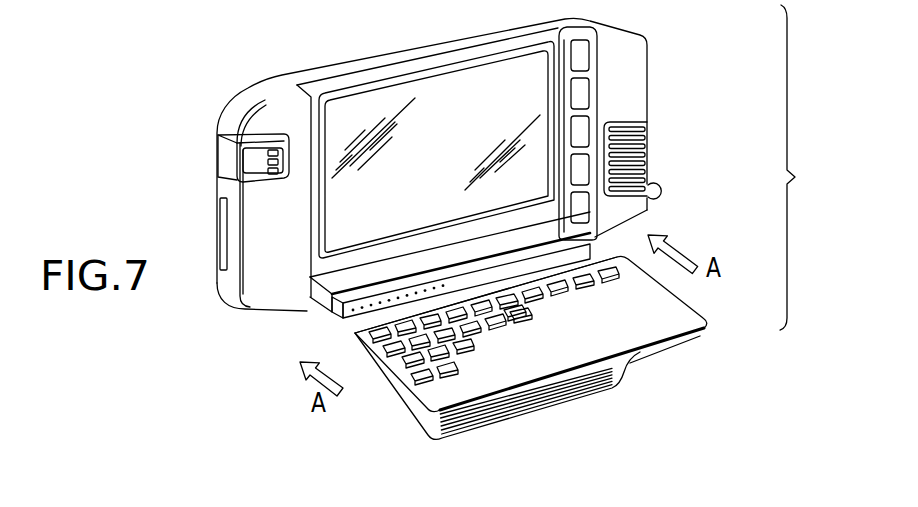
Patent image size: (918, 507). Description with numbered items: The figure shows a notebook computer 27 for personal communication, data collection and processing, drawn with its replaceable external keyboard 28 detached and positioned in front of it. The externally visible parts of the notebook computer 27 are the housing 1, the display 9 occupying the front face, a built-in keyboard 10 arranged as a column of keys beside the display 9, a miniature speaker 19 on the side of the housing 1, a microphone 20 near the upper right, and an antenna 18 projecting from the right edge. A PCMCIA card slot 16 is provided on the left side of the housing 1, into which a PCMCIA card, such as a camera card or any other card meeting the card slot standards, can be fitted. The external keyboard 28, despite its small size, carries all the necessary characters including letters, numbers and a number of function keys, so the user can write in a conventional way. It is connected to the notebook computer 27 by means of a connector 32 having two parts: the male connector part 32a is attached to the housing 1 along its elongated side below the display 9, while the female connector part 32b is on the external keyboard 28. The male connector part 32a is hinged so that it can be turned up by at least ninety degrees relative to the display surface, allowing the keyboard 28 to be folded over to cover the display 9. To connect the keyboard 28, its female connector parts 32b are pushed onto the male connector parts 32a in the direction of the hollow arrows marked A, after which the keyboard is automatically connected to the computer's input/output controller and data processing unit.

The housing 1 is at (252, 103).
The display 9 is at (378, 91).
The keyboard 10 is at (599, 84).
The PCMCIA card slot 16 is at (223, 222).
The antenna 18 is at (661, 189).
The miniature speaker 19 is at (222, 160).
The microphone 20 is at (645, 157).
The notebook computer 27 is at (718, 139).
The external keyboard 28 is at (704, 322).
The connector 32 is at (648, 217).
The male connector part 32a is at (325, 320).
The female connector part 32b is at (344, 333).